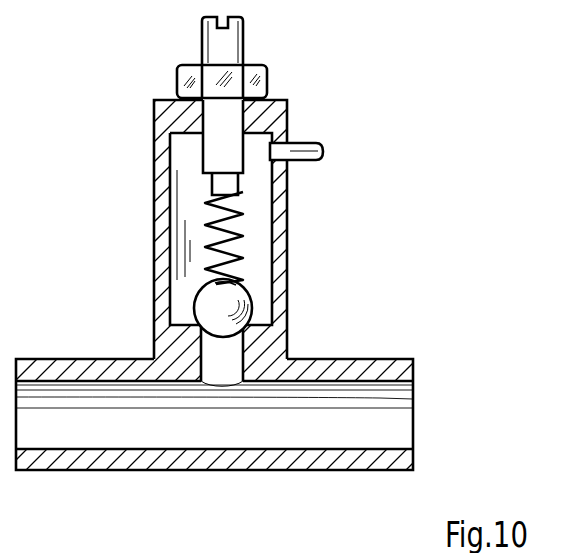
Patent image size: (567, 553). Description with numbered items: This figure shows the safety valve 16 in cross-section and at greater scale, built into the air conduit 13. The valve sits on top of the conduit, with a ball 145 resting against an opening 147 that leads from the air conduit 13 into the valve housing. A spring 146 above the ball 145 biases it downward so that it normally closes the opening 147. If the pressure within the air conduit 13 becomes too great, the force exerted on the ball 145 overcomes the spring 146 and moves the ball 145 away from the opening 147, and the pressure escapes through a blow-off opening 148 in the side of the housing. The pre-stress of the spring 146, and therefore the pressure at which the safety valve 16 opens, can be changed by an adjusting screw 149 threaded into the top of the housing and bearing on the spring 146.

The air conduit 13 is at (398, 432).
The safety valve 16 is at (364, 196).
The ball 145 is at (251, 305).
The spring 146 is at (247, 235).
The opening 147 is at (203, 352).
The blow-off opening 148 is at (325, 140).
The adjusting screw 149 is at (212, 42).